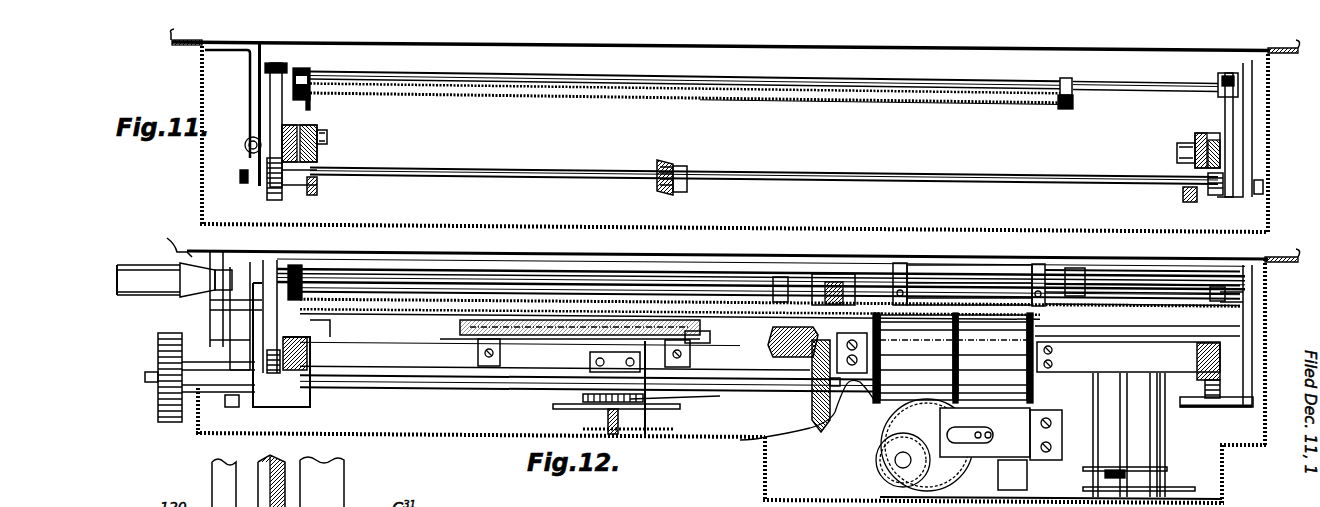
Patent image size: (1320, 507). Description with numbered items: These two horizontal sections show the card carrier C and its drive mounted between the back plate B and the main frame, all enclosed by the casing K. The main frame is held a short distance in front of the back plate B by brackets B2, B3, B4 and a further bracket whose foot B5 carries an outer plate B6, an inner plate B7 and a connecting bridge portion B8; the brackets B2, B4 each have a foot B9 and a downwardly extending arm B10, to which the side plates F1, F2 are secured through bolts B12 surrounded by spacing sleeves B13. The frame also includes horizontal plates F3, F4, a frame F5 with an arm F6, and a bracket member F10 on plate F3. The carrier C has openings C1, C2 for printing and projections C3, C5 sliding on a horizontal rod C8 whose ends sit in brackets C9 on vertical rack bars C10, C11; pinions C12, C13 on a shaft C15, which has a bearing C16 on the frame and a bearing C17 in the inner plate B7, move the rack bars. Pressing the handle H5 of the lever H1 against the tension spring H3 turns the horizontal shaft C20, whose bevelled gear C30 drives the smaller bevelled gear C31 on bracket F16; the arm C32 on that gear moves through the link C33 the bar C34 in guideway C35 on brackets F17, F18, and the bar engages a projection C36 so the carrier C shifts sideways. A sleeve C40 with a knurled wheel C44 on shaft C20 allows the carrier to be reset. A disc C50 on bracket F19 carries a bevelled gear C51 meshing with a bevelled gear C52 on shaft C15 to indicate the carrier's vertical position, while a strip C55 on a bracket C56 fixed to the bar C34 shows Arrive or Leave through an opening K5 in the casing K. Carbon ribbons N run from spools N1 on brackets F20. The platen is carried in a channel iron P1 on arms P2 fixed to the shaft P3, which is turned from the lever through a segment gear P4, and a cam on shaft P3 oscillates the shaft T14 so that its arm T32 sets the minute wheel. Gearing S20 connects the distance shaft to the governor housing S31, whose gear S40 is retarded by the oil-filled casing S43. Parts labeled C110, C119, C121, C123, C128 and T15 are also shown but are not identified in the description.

In FIG. 12, the back plate B is at (1210, 252).
In FIG. 11, the bracket B2 is at (250, 122).
In FIG. 12, the bracket B3 is at (1254, 373).
In FIG. 11, the bracket B4 is at (1254, 100).
In FIG. 12, the foot B5 is at (205, 251).
In FIG. 12, the outer plate B6 is at (280, 311).
In FIG. 12, the inner plate B7 is at (312, 353).
In FIG. 12, the bridge portion B8 is at (275, 409).
In FIG. 11, the foot B9 is at (220, 48).
In FIG. 12, the foot B9 is at (262, 263).
In FIG. 11, the arm B10 is at (1262, 202).
In FIG. 12, the bolts B12 is at (1255, 403).
In FIG. 11, the spacing sleeves B13 is at (1240, 180).
In FIG. 11, the card carrier C is at (605, 90).
In FIG. 12, the card carrier C is at (600, 302).
In FIG. 11, the opening C1 is at (790, 94).
In FIG. 12, the opening C1 is at (790, 312).
In FIG. 11, the opening C2 is at (820, 101).
In FIG. 12, the opening C2 is at (835, 307).
In FIG. 11, the projection C3 is at (1068, 79).
In FIG. 11, the projection C5 is at (312, 70).
In FIG. 12, the projection C5 is at (350, 296).
In FIG. 11, the horizontal rod C8 is at (1135, 96).
In FIG. 11, the bracket C9 is at (282, 66).
In FIG. 12, the bracket C9 is at (290, 301).
In FIG. 11, the rack bar C10 is at (328, 139).
In FIG. 11, the rack bar C11 is at (1178, 151).
In FIG. 12, the rack bar C11 is at (1195, 366).
In FIG. 11, the pinion C12 is at (296, 191).
In FIG. 11, the pinion C13 is at (1217, 199).
In FIG. 12, the pinion C13 is at (1212, 406).
In FIG. 11, the shaft C15 is at (565, 153).
In FIG. 12, the shaft C15 is at (1100, 411).
In FIG. 11, the bearing C16 is at (1182, 196).
In FIG. 11, the bearing C17 is at (320, 189).
In FIG. 12, the horizontal shaft C20 is at (765, 479).
In FIG. 12, the bevelled gear C30 is at (815, 416).
In FIG. 12, the bevelled gear C31 is at (770, 346).
In FIG. 12, the arm C32 is at (765, 302).
In FIG. 12, the link C33 is at (528, 320).
In FIG. 12, the bar C34 is at (477, 353).
In FIG. 12, the guideway C35 is at (540, 349).
In FIG. 11, the projection C36 is at (312, 109).
In FIG. 12, the projection C36 is at (310, 327).
In FIG. 12, the sleeve C40 is at (165, 383).
In FIG. 12, the knurled wheel C44 is at (158, 347).
In FIG. 12, the circular disc C50 is at (560, 421).
In FIG. 12, the bevelled gear C51 is at (560, 396).
In FIG. 11, the bevelled gear C52 is at (675, 165).
In FIG. 12, the bevelled gear C52 is at (670, 401).
In FIG. 12, the strip C55 is at (690, 436).
In FIG. 12, the bracket C56 is at (665, 439).
In FIG. 12, the gear C110 is at (300, 367).
In FIG. 12, the collar C119 is at (230, 409).
In FIG. 12, the pin C121 is at (240, 402).
In FIG. 12, the hub C123 is at (165, 396).
In FIG. 11, the gear C128 is at (268, 197).
In FIG. 12, the gear C128 is at (285, 411).
In FIG. 11, the side plate F1 is at (330, 133).
In FIG. 12, the side plate F1 is at (310, 351).
In FIG. 11, the side plate F2 is at (1195, 136).
In FIG. 12, the side plate F2 is at (1200, 343).
In FIG. 12, the horizontal plate F3 is at (1130, 411).
In FIG. 12, the horizontal plate F4 is at (540, 361).
In FIG. 12, the frame F5 is at (768, 493).
In FIG. 12, the arm F6 is at (212, 479).
In FIG. 12, the bracket member F10 is at (1001, 434).
In FIG. 12, the bracket F16 is at (788, 356).
In FIG. 12, the bracket F17 is at (680, 337).
In FIG. 12, the bracket F18 is at (480, 369).
In FIG. 12, the bracket F19 is at (590, 353).
In FIG. 12, the brackets F20 is at (1082, 355).
In FIG. 12, the lever H1 is at (218, 306).
In FIG. 11, the tension spring H3 is at (244, 148).
In FIG. 12, the handle H5 is at (140, 272).
In FIG. 11, the casing K is at (962, 206).
In FIG. 12, the casing K is at (768, 462).
In FIG. 12, the opening K5 is at (608, 426).
In FIG. 12, the carbon ribbons N is at (953, 358).
In FIG. 12, the spools N1 is at (873, 391).
In FIG. 12, the channel iron P1 is at (945, 278).
In FIG. 12, the arms P2 is at (900, 264).
In FIG. 12, the shaft P3 is at (695, 288).
In FIG. 12, the segment gear P4 is at (236, 300).
In FIG. 12, the gearing S20 is at (878, 471).
In FIG. 12, the housing S31 is at (884, 448).
In FIG. 12, the gear S40 is at (930, 429).
In FIG. 12, the casing S43 is at (1012, 479).
In FIG. 12, the shaft T14 is at (1120, 324).
In FIG. 12, the plate T15 is at (1190, 497).
In FIG. 12, the arm T32 is at (1070, 320).